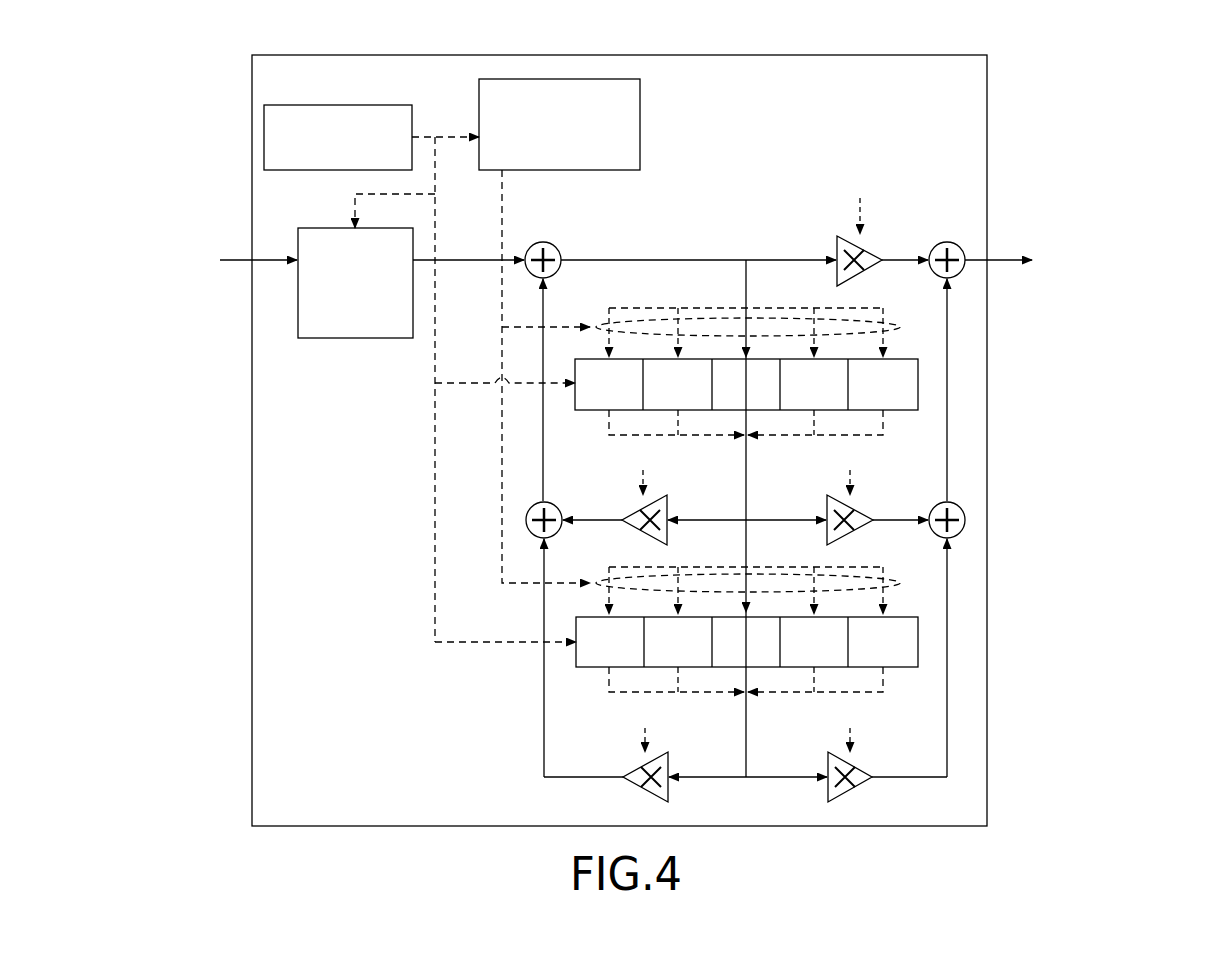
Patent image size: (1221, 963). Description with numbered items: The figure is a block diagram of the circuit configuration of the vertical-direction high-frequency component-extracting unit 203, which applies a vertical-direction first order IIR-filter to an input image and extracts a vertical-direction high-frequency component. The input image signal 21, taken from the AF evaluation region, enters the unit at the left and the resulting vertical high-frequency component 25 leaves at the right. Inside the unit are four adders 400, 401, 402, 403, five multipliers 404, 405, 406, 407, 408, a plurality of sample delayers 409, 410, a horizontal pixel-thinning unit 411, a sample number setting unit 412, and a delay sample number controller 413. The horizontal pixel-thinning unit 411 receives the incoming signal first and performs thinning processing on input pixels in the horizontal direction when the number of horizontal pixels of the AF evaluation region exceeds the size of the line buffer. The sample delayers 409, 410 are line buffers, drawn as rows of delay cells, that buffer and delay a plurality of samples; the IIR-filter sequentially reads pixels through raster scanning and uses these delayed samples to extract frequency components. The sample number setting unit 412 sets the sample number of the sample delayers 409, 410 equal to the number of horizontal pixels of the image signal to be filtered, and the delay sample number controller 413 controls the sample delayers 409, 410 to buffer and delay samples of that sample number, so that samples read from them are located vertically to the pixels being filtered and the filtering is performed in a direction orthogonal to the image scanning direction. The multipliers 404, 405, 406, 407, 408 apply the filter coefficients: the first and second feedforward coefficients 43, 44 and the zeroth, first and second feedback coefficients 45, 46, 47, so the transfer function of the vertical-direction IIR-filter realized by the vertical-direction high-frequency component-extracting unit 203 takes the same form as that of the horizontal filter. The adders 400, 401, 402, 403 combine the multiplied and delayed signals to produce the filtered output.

The vertical-direction high-frequency component-extracting unit 203 is at (641, 55).
The input image signal 21 is at (205, 266).
The vertical high-frequency component 25 is at (1075, 262).
The adder 400 is at (554, 247).
The adder 401 is at (556, 504).
The adder 402 is at (945, 242).
The adder 403 is at (940, 504).
The multiplier 404 is at (878, 252).
The multiplier 405 is at (672, 500).
The multiplier 406 is at (823, 500).
The multiplier 407 is at (673, 760).
The multiplier 408 is at (824, 760).
The sample delayer 409 is at (912, 410).
The sample delayer 410 is at (912, 667).
The horizontal pixel-thinning unit 411 is at (379, 338).
The sample number setting unit 412 is at (376, 105).
The delay sample number controller 413 is at (640, 127).
The feedforward coefficient 43 is at (670, 472).
The feedforward coefficient 44 is at (633, 729).
The feedback coefficient 45 is at (837, 205).
The feedback coefficient 46 is at (820, 472).
The feedback coefficient 47 is at (830, 729).